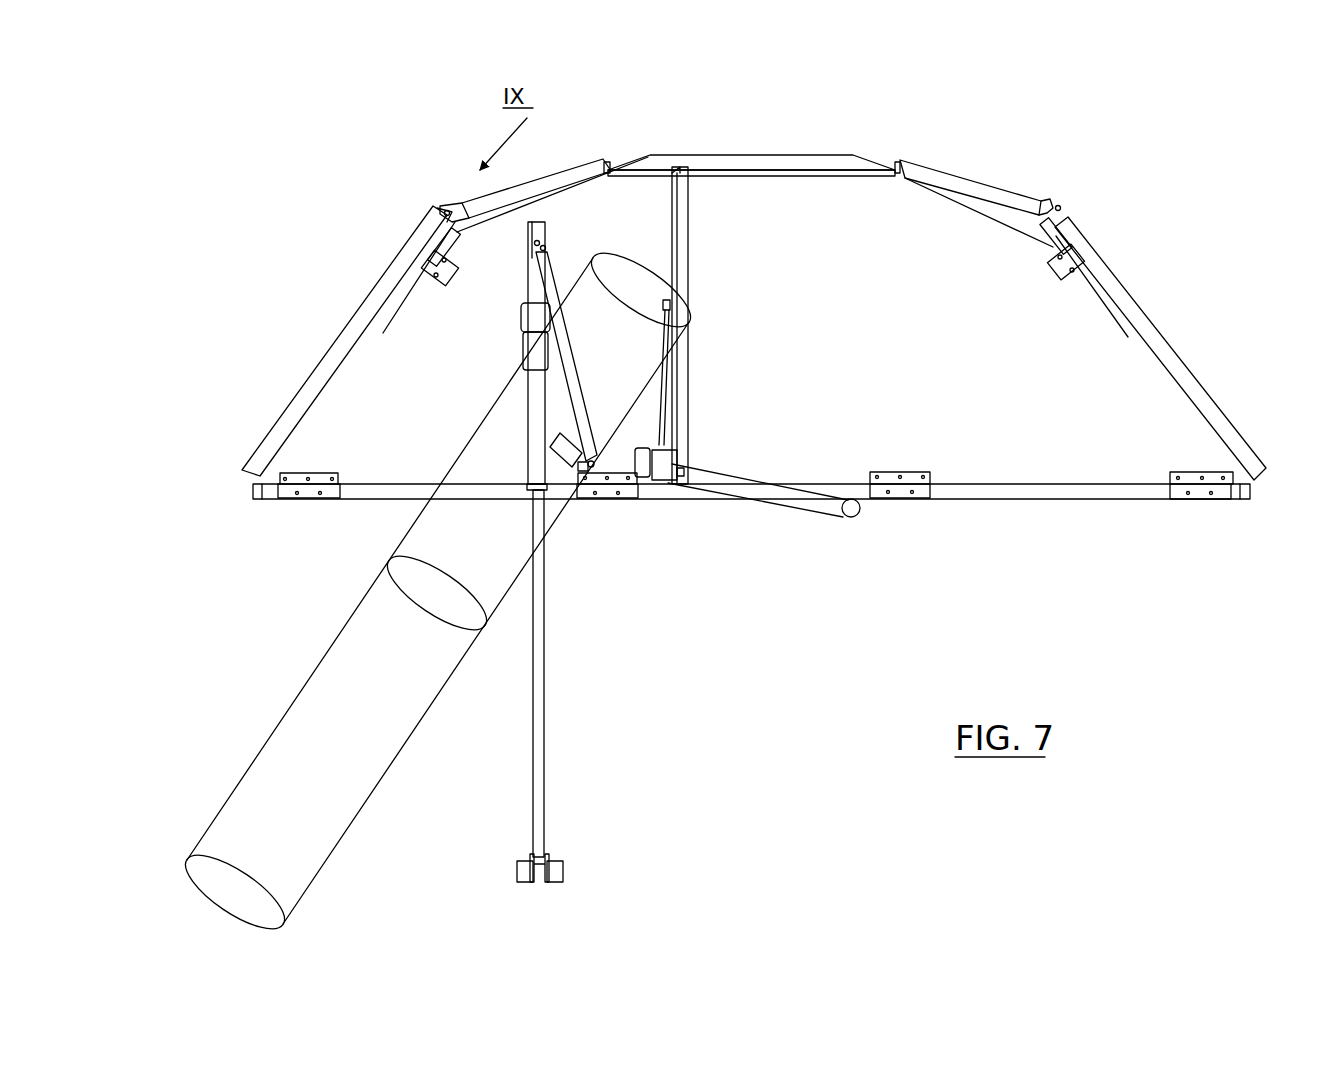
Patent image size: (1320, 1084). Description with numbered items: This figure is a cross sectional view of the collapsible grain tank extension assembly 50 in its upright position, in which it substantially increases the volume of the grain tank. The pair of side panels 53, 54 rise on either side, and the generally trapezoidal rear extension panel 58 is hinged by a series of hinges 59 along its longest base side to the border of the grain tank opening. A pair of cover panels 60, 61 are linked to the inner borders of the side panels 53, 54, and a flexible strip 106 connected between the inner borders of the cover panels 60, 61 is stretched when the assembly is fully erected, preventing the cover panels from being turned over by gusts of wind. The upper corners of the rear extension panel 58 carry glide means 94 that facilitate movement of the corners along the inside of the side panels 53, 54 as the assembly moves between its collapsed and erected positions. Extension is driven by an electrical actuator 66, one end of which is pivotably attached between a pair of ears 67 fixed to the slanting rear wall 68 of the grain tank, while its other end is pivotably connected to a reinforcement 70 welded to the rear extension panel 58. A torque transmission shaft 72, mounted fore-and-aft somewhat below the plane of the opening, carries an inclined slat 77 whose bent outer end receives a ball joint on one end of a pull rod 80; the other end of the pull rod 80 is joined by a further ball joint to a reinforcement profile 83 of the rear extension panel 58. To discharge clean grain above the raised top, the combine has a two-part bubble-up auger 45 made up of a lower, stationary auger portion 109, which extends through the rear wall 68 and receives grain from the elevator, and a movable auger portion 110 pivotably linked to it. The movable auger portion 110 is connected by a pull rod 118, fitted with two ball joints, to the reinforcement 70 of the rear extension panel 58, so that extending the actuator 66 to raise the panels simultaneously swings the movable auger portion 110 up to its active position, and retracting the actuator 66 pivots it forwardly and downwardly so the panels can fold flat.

The bubble-up auger 45 is at (266, 660).
The grain tank extension assembly 50 is at (880, 122).
The side panel 53 is at (1160, 335).
The side panel 54 is at (316, 372).
The rear extension panel 58 is at (830, 352).
The hinges 59 is at (900, 500).
The cover panel 60 is at (960, 168).
The cover panel 61 is at (540, 178).
The electrical actuator 66 is at (548, 664).
The ears 67 is at (557, 903).
The rear wall 68 is at (632, 772).
The reinforcement 70 is at (528, 267).
The torque transmission shaft 72 is at (854, 520).
The inclined slat 77 is at (787, 510).
The pull rod 80 is at (658, 430).
The reinforcement profile 83 is at (672, 250).
The glide means 94 is at (409, 224).
The flexible strip 106 is at (793, 177).
The stationary auger portion 109 is at (372, 780).
The movable auger portion 110 is at (410, 540).
The pull rod 118 is at (556, 282).